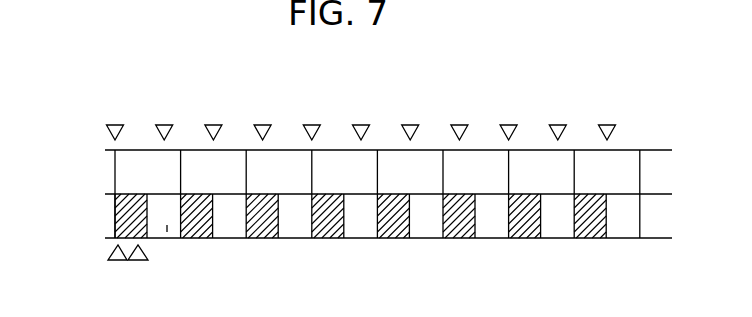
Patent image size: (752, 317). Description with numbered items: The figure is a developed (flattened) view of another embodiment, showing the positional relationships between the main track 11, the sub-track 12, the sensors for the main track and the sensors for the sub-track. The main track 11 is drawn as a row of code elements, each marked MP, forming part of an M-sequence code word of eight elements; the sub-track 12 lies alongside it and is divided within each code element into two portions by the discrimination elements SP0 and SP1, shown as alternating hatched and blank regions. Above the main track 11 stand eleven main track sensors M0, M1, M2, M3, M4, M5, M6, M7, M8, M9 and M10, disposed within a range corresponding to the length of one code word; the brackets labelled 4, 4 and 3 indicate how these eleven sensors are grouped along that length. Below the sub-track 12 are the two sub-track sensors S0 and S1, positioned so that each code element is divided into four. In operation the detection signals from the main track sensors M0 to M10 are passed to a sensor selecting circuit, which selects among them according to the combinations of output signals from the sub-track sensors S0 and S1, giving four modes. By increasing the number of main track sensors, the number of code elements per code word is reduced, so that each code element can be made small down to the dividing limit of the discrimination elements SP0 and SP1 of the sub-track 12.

The main track 11 is at (110, 171).
The sub-track 12 is at (111, 213).
The group count of four markers 4 is at (275, 101).
The group count of three markers 3 is at (623, 101).
The main track sensor M0 is at (114, 124).
The main track sensor M1 is at (163, 124).
The main track sensor M2 is at (212, 124).
The main track sensor M3 is at (261, 124).
The main track sensor M4 is at (310, 124).
The main track sensor M5 is at (359, 124).
The main track sensor M6 is at (408, 124).
The main track sensor M7 is at (457, 124).
The main track sensor M8 is at (506, 124).
The main track sensor M9 is at (555, 124).
The main track sensor M10 is at (607, 124).
The discrimination element SP0 is at (117, 240).
The discrimination element SP1 is at (167, 232).
The sub-track sensor S0 is at (118, 262).
The sub-track sensor S1 is at (138, 262).